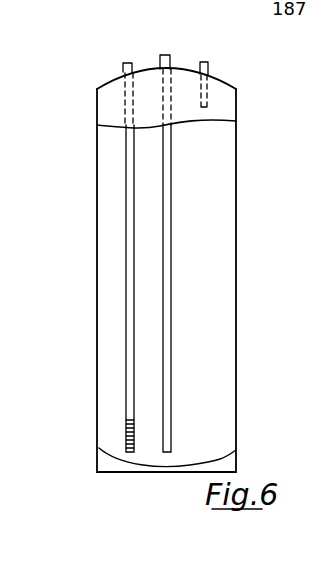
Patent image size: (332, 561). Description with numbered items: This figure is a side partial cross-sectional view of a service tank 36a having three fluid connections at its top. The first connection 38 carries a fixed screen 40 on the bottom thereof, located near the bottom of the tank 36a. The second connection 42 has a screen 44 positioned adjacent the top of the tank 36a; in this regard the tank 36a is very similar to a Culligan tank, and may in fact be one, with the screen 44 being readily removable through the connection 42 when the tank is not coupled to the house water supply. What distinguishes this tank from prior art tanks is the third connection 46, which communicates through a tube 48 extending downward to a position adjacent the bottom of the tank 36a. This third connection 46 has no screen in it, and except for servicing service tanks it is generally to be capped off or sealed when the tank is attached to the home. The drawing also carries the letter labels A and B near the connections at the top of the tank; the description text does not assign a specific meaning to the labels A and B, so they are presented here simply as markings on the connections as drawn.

The tank 36a is at (96, 303).
The first connection 38 is at (122, 70).
The fixed screen 40 is at (127, 428).
The second connection 42 is at (209, 70).
The screen 44 is at (207, 107).
The third connection 46 is at (158, 56).
The tube 48 is at (172, 342).
The inlet A is at (207, 61).
The inlet B is at (178, 53).